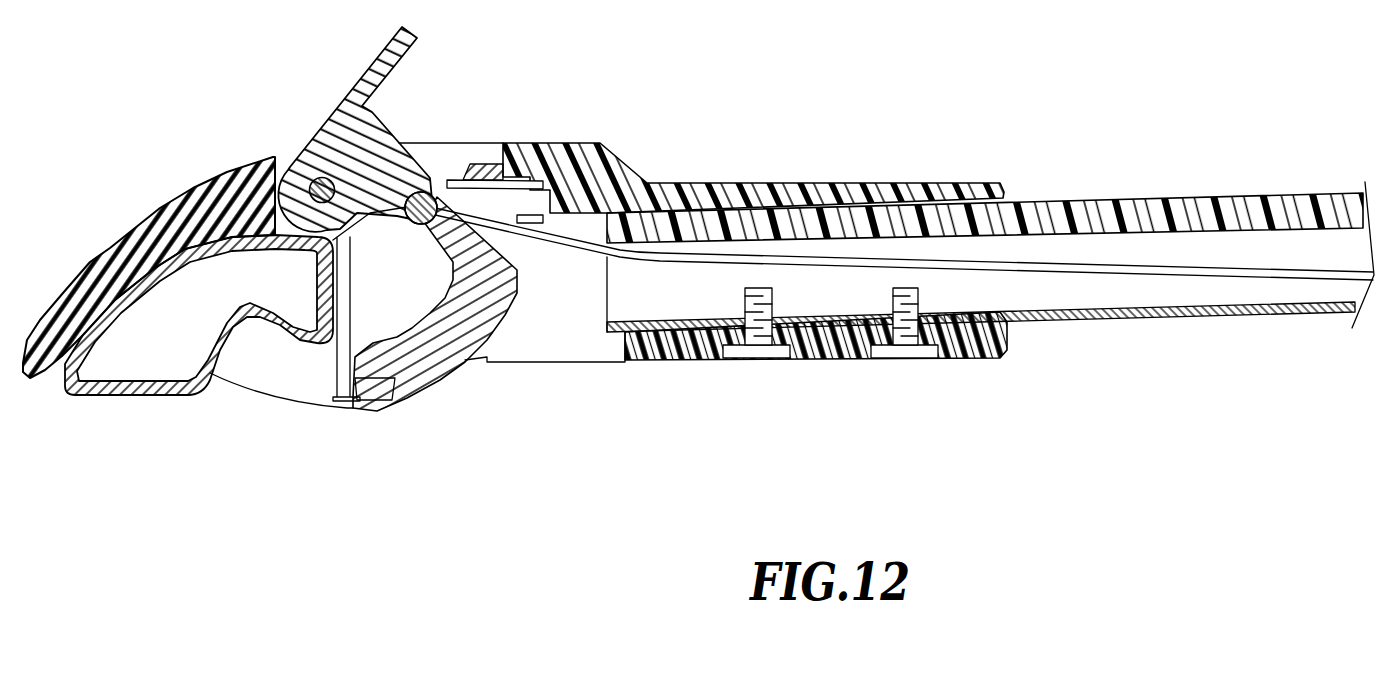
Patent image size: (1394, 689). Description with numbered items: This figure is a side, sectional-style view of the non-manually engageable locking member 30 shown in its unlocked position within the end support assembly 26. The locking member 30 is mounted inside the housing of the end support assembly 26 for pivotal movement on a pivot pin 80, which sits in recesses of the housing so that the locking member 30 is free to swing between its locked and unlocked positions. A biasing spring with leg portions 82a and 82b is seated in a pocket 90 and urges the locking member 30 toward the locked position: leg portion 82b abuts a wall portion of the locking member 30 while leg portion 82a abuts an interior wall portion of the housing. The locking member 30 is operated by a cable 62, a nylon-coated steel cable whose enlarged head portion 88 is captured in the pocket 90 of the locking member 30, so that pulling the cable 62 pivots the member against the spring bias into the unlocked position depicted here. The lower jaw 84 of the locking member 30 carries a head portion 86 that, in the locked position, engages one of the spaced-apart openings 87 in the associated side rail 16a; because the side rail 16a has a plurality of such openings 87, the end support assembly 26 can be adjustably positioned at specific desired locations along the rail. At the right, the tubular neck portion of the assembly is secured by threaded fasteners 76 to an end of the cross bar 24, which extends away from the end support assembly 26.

The side rail 16a is at (71, 396).
The cross bar 24 is at (1221, 193).
The end support assembly 26 is at (883, 114).
The locking member 30 is at (331, 118).
The cable 62 is at (1060, 272).
The threaded fasteners 76 is at (906, 360).
The pivot pin 80 is at (292, 160).
The leg portion of biasing spring 82a is at (527, 180).
The leg portion of biasing spring 82b is at (530, 215).
The lower jaw 84 is at (456, 367).
The head portion 86 is at (374, 398).
The openings 87 is at (215, 355).
The enlarged head portion 88 is at (409, 226).
The pocket 90 is at (449, 180).